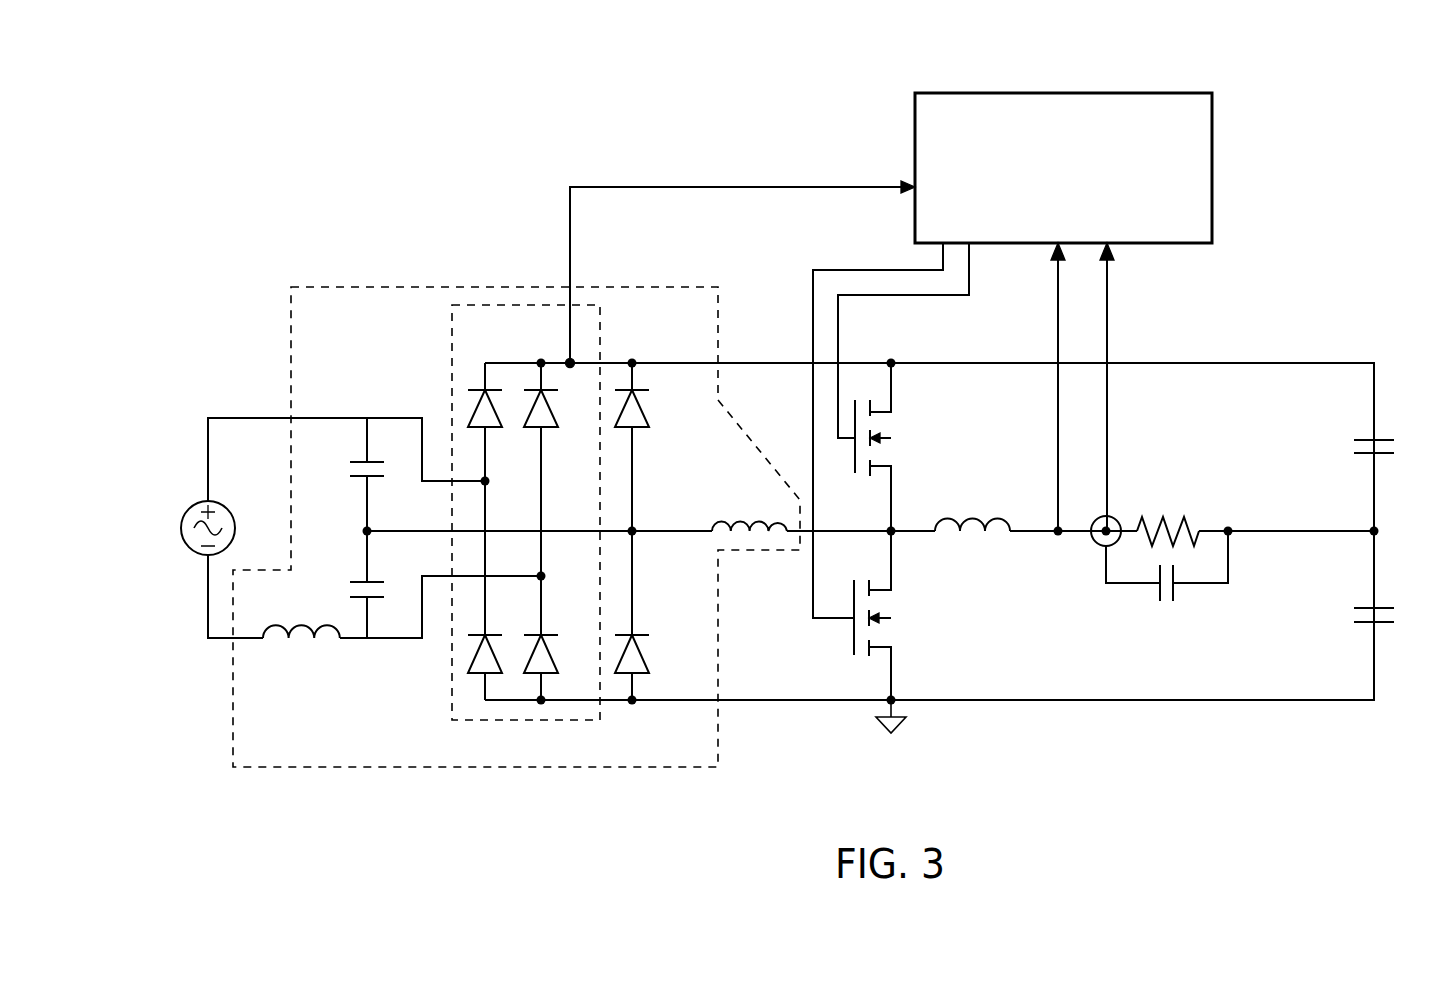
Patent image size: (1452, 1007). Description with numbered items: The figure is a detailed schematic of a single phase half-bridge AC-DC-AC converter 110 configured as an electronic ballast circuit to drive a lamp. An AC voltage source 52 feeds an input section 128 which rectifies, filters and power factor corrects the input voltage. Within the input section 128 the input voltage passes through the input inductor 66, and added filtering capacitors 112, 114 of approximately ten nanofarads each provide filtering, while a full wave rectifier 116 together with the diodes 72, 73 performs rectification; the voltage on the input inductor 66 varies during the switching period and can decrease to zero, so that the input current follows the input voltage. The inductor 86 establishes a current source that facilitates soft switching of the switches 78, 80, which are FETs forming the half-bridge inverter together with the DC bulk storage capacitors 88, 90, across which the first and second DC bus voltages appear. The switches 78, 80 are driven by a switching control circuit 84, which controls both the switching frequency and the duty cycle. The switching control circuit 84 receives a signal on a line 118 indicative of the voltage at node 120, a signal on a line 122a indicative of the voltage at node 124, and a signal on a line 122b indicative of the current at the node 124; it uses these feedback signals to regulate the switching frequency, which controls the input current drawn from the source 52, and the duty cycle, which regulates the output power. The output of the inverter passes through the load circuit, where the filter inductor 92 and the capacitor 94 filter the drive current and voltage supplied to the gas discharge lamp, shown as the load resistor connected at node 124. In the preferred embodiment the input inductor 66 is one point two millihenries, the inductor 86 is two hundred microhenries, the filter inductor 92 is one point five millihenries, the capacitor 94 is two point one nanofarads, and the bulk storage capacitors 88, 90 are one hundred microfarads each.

The voltage source 52 is at (196, 503).
The inductor La 66 is at (302, 648).
The diode Da 72 is at (648, 418).
The diode Db 73 is at (645, 655).
The switch M1 78 is at (880, 432).
The switch M2 80 is at (880, 612).
The switching control circuit 84 is at (1145, 93).
The inductor L1 86 is at (718, 518).
The capacitor C1 88 is at (1386, 440).
The capacitor C2 90 is at (1386, 608).
The inductor Lf 92 is at (965, 520).
The capacitor 94 is at (1167, 566).
The single phase half-bridge AC-DC-AC converter 110 is at (1313, 122).
The filtering capacitor 112 is at (376, 480).
The filtering capacitor 114 is at (376, 586).
The full wave rectifier 116 is at (450, 694).
The line 118 is at (568, 213).
The node 120 is at (568, 360).
The line 122a is at (1058, 337).
The line 122b is at (1107, 337).
The node 124 is at (1100, 546).
The input section 128 is at (358, 290).